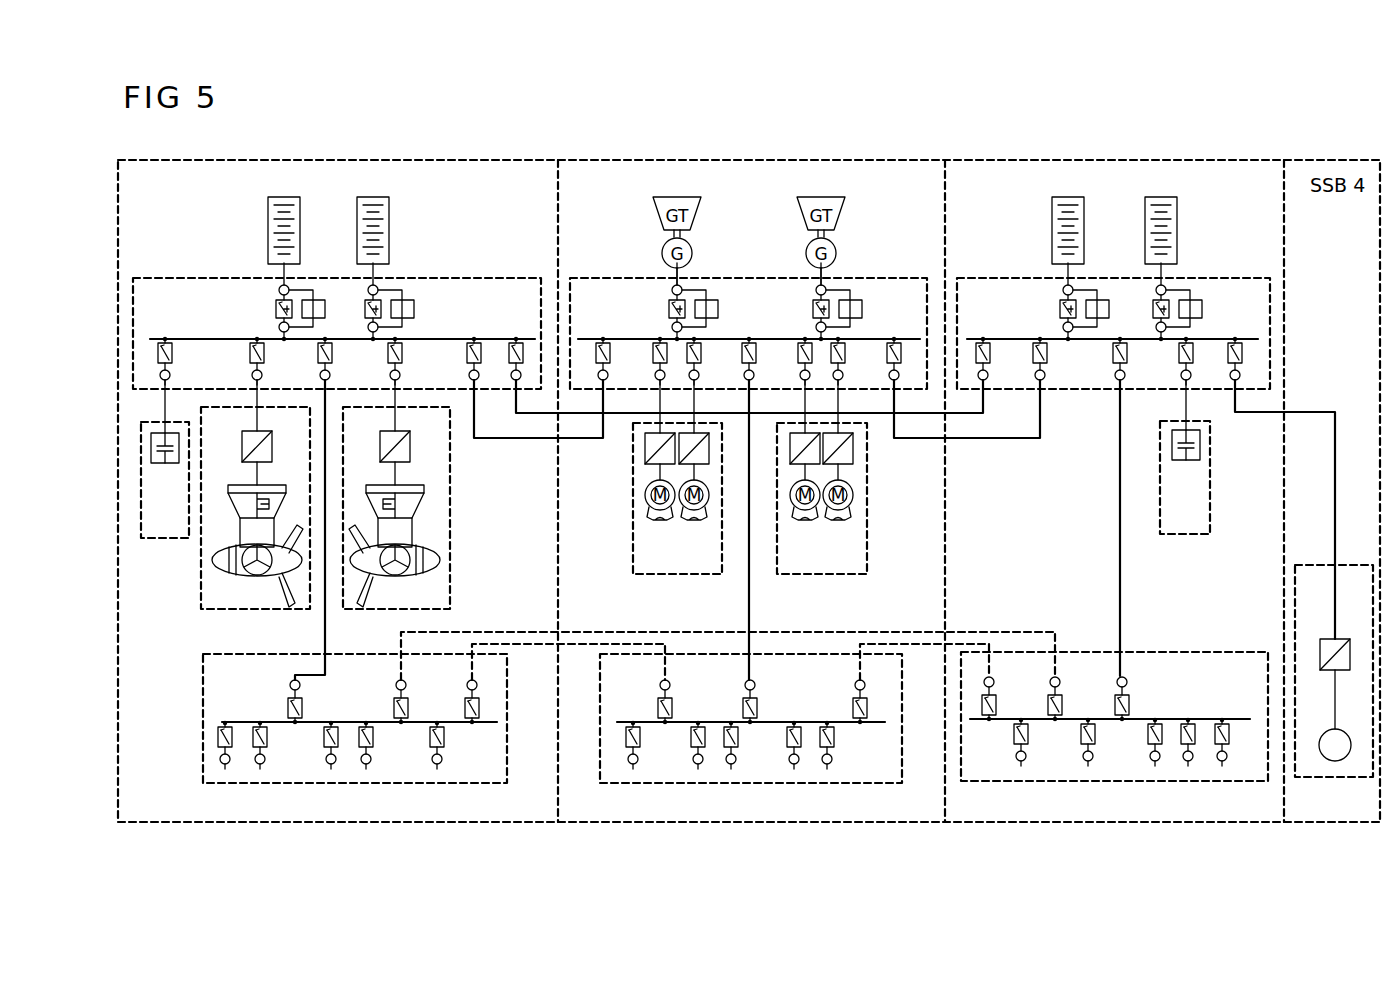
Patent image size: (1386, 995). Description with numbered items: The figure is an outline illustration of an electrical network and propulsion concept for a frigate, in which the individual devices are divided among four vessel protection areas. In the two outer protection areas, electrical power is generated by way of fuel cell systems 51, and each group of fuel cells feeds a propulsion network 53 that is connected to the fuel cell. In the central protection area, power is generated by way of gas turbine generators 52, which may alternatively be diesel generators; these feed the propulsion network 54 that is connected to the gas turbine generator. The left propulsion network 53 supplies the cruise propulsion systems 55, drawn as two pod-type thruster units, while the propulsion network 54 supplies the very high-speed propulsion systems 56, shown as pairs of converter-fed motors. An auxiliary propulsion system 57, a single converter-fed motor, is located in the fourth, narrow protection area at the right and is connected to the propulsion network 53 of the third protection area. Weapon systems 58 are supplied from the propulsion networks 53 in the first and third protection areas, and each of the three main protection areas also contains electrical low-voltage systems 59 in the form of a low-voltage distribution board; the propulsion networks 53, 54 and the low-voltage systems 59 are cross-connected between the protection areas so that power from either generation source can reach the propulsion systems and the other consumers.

The power generation by way of fuel cell systems 51 is at (430, 176).
The power generation by way of gas turbine generators 52 is at (822, 176).
The propulsion network connected to the fuel cell 53 is at (163, 285).
The propulsion network connected to the gas turbine generator 54 is at (902, 285).
The cruise propulsion systems 55 is at (222, 600).
The very high-speed propulsion systems 56 is at (643, 552).
The auxiliary propulsion system 57 is at (1353, 565).
The weapon systems 58 is at (154, 533).
The electrical low-voltage systems 59 is at (210, 712).